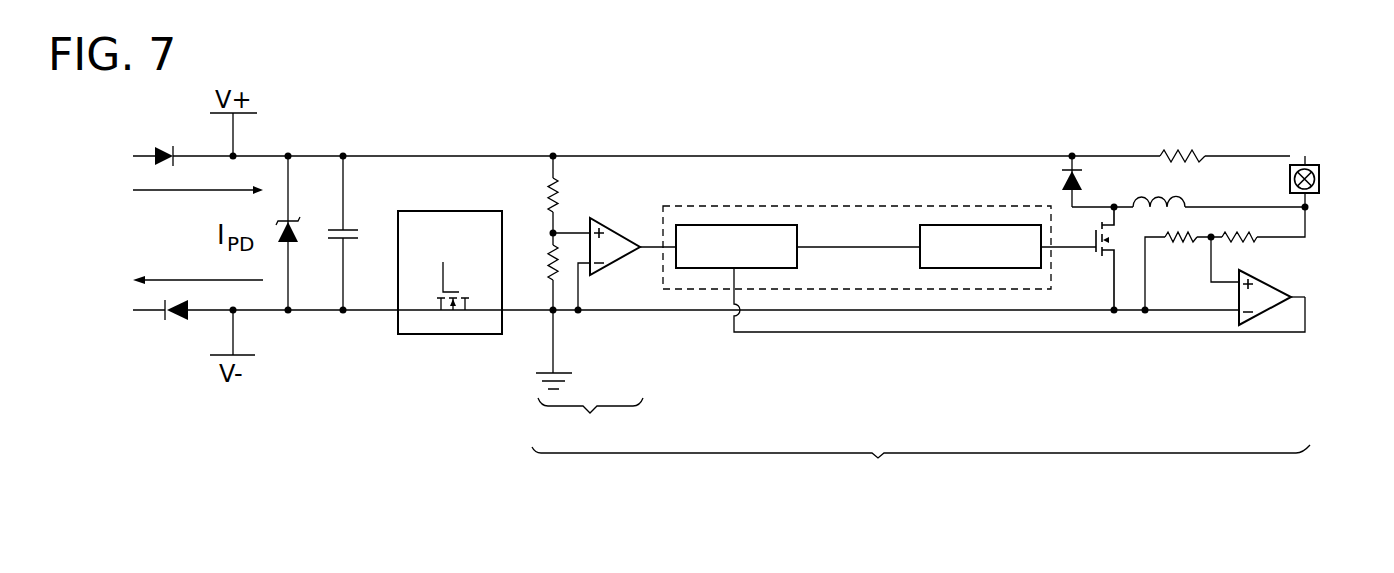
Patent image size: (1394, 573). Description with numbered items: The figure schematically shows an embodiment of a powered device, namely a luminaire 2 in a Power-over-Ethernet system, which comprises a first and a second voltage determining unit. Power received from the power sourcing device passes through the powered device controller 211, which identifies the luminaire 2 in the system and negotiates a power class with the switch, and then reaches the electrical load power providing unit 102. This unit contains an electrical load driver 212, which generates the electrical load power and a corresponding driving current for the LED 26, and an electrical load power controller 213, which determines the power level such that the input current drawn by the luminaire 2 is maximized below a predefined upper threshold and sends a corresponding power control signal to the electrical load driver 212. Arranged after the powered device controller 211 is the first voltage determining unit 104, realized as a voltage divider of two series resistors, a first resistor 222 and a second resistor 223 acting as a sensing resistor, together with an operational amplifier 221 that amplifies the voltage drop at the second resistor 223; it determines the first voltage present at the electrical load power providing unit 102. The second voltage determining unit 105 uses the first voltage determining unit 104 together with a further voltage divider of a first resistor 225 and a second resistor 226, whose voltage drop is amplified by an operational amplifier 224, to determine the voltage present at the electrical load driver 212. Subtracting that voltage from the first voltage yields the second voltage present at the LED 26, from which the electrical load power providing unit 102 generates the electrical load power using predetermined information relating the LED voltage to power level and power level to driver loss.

The luminaire 2 is at (458, 118).
The LED 26 is at (1312, 165).
The electrical load power providing unit 102 is at (1012, 206).
The first voltage determining unit 104 is at (590, 422).
The second voltage determining unit 105 is at (921, 469).
The powered device controller 211 is at (455, 335).
The electrical load driver 212 is at (955, 225).
The electrical load power controller 213 is at (725, 225).
The operational amplifier 221 is at (610, 275).
The first resistor 222 is at (575, 185).
The second resistor 223 is at (566, 290).
The operational amplifier 224 is at (1267, 313).
The first resistor 225 is at (1268, 263).
The second resistor 226 is at (1195, 262).